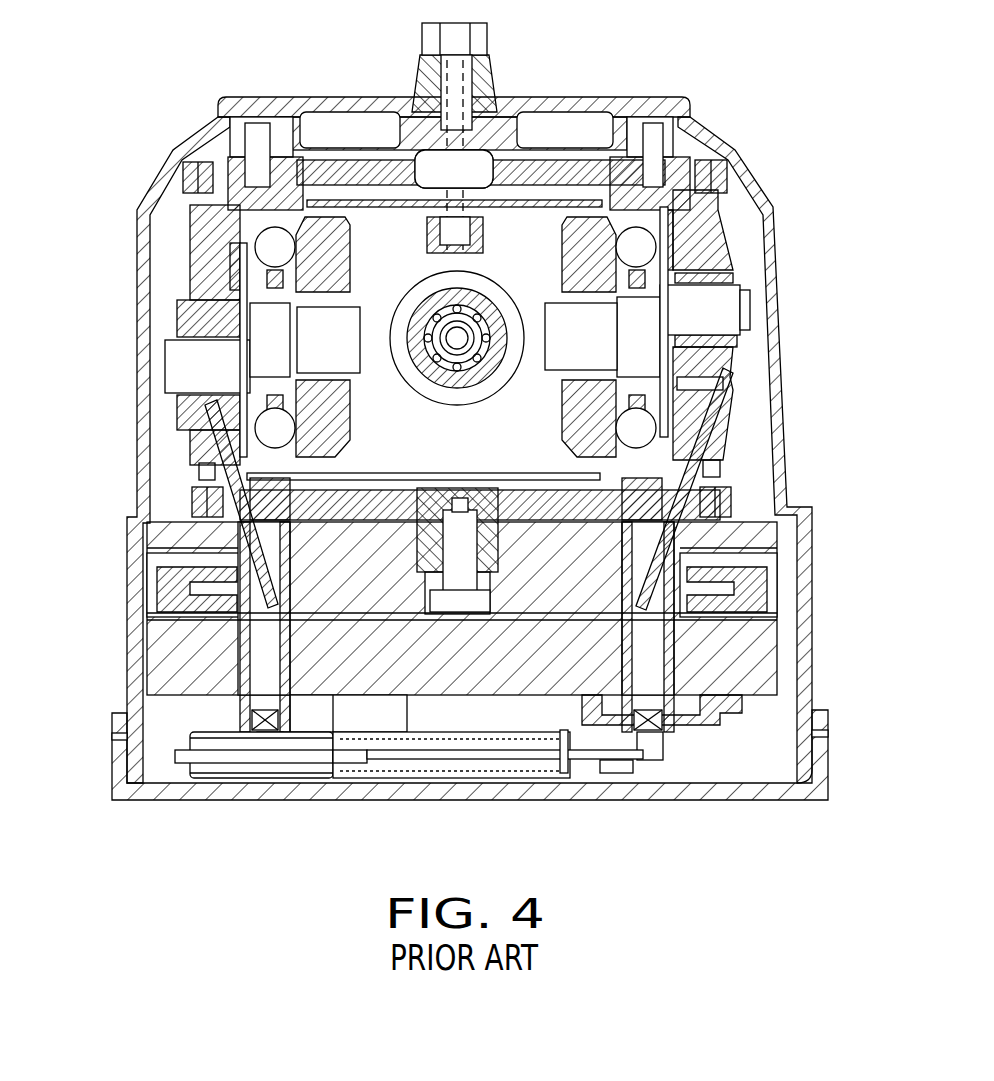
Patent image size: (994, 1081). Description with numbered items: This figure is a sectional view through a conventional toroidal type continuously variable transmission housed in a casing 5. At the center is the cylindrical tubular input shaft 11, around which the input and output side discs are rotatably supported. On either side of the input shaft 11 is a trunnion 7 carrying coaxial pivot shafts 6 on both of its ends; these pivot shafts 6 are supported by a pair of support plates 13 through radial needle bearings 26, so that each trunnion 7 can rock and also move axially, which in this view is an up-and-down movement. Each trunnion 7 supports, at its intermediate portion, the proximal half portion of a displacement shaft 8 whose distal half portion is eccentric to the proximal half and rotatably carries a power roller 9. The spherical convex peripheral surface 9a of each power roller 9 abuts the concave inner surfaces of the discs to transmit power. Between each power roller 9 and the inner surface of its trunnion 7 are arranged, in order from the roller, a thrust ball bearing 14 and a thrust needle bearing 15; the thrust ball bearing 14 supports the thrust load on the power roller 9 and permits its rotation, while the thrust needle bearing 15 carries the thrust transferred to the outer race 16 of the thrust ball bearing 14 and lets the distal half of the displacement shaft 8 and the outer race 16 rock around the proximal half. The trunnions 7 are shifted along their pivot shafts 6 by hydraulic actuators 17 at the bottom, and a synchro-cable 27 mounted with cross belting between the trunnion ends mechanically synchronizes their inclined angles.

The casing 5 is at (132, 652).
The pivot shaft 6 is at (228, 160).
The trunnion 7 is at (238, 287).
The displacement shaft 8 is at (265, 353).
The power roller 9 is at (328, 237).
The peripheral surface 9a is at (337, 440).
The input shaft 11 is at (432, 312).
The support plate 13 is at (522, 172).
The thrust ball bearing 14 is at (237, 417).
The thrust needle bearing 15 is at (238, 258).
The outer race 16 is at (258, 213).
The hydraulic actuator 17 is at (262, 597).
The radial needle bearing 26 is at (257, 123).
The synchro-cable 27 is at (395, 482).